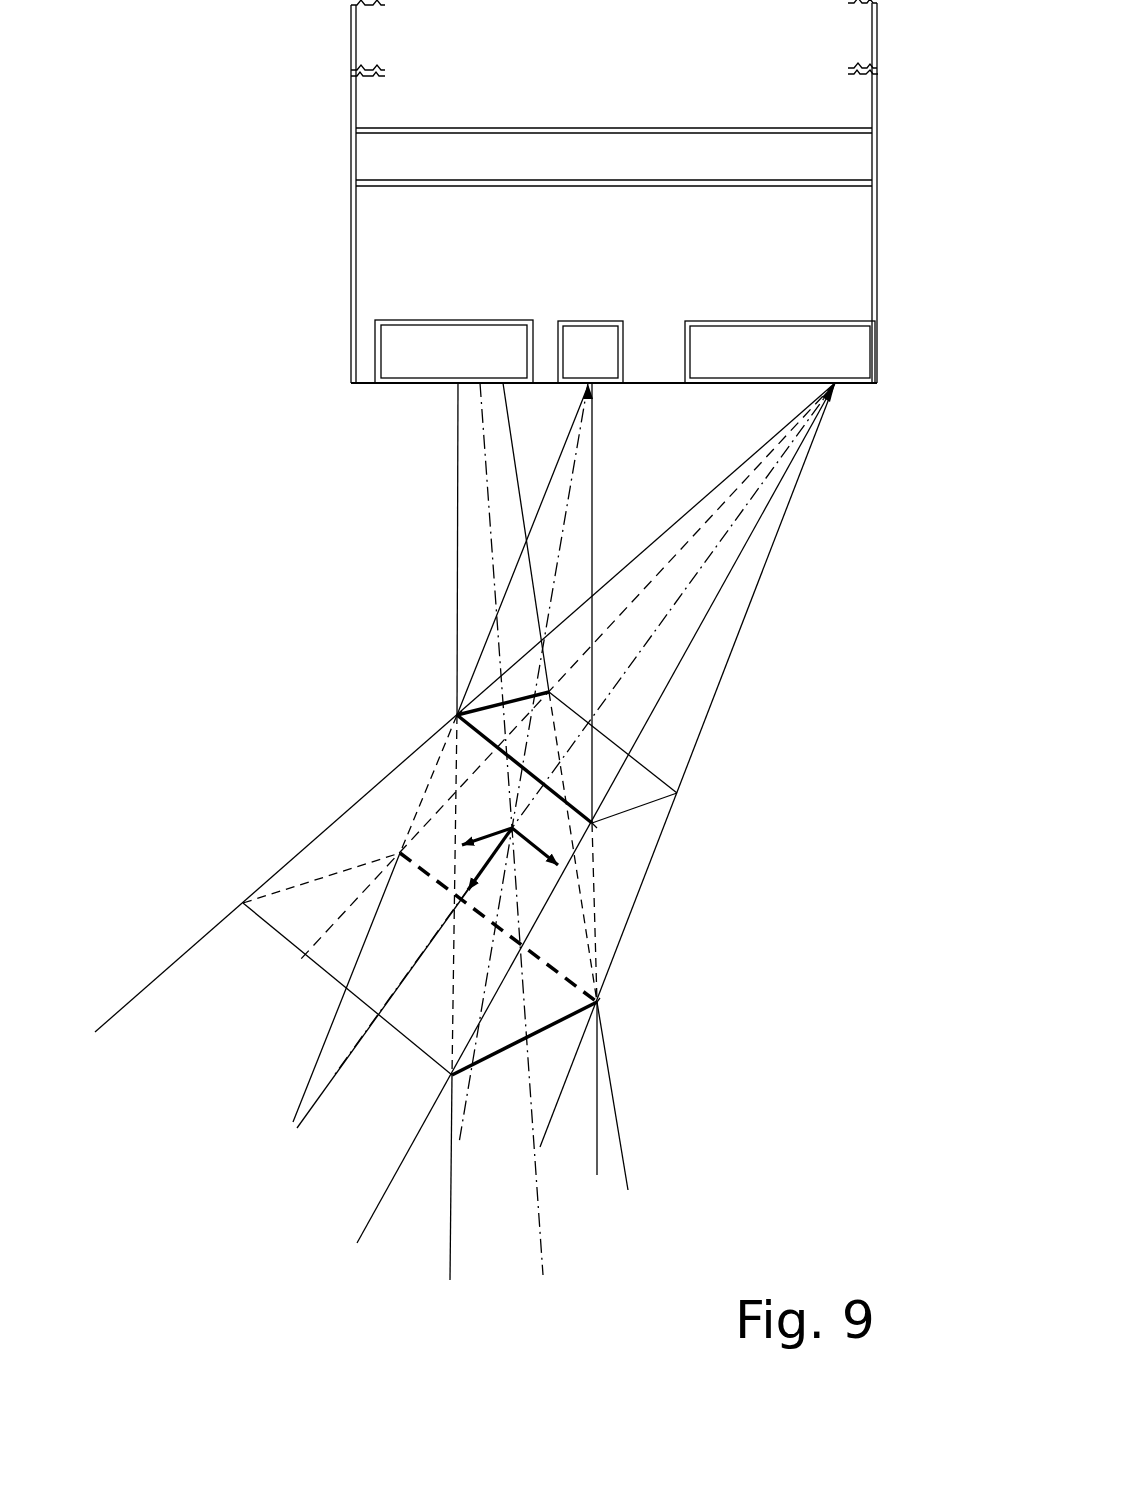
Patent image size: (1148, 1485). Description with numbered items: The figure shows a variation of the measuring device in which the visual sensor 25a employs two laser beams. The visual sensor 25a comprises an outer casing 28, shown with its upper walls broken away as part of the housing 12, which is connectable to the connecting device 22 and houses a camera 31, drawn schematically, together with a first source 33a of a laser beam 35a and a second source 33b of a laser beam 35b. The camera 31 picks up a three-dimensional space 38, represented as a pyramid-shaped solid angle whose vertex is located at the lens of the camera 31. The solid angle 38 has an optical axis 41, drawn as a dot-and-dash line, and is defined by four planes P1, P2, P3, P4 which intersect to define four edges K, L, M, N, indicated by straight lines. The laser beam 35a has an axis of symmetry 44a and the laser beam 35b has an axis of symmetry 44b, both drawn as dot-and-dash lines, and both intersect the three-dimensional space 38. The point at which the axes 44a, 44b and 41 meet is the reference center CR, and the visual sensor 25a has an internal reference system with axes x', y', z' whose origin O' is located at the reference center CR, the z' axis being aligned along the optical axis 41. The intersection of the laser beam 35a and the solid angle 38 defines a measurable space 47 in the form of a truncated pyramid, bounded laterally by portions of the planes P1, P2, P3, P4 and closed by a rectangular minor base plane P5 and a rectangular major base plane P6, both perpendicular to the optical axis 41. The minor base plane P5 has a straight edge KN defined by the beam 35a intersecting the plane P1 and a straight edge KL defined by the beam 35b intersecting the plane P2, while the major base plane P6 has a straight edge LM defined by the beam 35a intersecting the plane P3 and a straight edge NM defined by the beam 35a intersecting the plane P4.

The housing 12 is at (853, 52).
The connecting device 22 is at (375, 150).
The visual sensor 25a is at (890, 222).
The outer casing 28 is at (348, 283).
The camera 31 is at (795, 345).
The first source 33a is at (443, 345).
The second source 33b is at (585, 340).
The laser beam 35a is at (470, 497).
The laser beam 35b is at (563, 478).
The three-dimensional space 38 is at (486, 813).
The optical axis 41 is at (640, 648).
The axis of symmetry 44a is at (497, 553).
The axis of symmetry 44b is at (576, 463).
The measurable space 47 is at (489, 889).
The plane P1 is at (708, 492).
The plane P2 is at (668, 569).
The plane P3 is at (745, 551).
The plane P4 is at (786, 505).
The minor base plane P5 is at (603, 762).
The major base plane P6 is at (412, 1045).
The edge K is at (413, 742).
The edge N is at (613, 716).
The edge L is at (594, 892).
The edge M is at (645, 880).
The straight edge KN is at (488, 702).
The straight edge KL is at (470, 735).
The straight edge LM is at (503, 1050).
The straight edge NM is at (558, 967).
The origin O' is at (466, 958).
The reference center CR is at (545, 829).
The X' axis x' is at (478, 811).
The Y' axis y' is at (532, 884).
The Z' axis z' is at (472, 915).